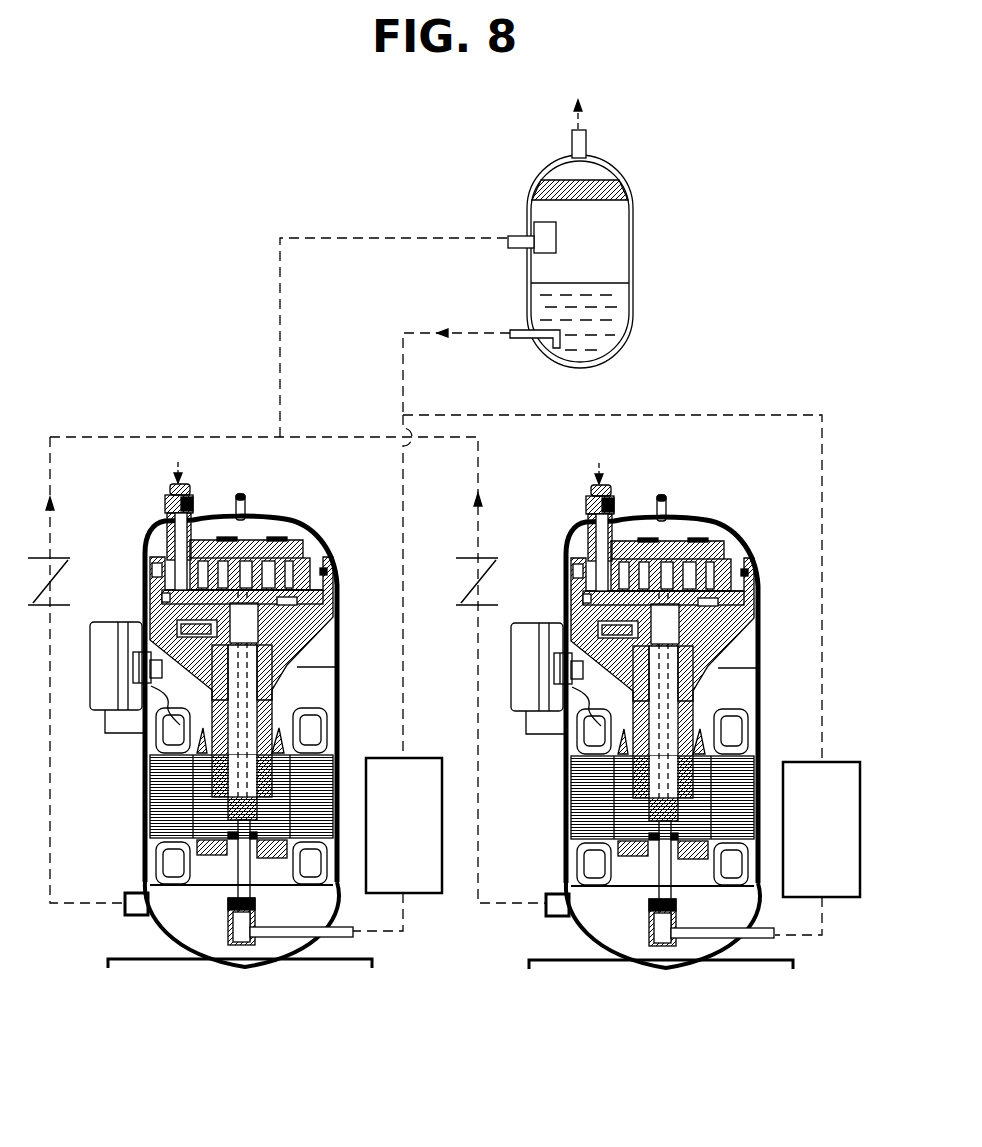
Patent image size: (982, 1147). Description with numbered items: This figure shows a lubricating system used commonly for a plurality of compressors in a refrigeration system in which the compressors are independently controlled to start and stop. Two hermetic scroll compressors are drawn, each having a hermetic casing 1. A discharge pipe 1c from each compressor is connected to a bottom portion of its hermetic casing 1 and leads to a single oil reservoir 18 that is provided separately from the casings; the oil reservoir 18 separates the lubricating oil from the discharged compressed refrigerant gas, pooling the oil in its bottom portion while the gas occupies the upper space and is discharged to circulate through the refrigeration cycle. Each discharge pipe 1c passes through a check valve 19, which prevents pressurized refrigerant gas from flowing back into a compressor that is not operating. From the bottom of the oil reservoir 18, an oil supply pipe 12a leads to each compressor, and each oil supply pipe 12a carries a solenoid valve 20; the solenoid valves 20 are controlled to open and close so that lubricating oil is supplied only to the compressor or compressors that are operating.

The hermetic casing 1 is at (337, 667).
The discharge pipe 1c is at (175, 437).
The oil supply pipe 12a is at (405, 513).
The oil reservoir 18 is at (633, 245).
The check valve 19 is at (55, 557).
The solenoid valve 20 is at (430, 897).